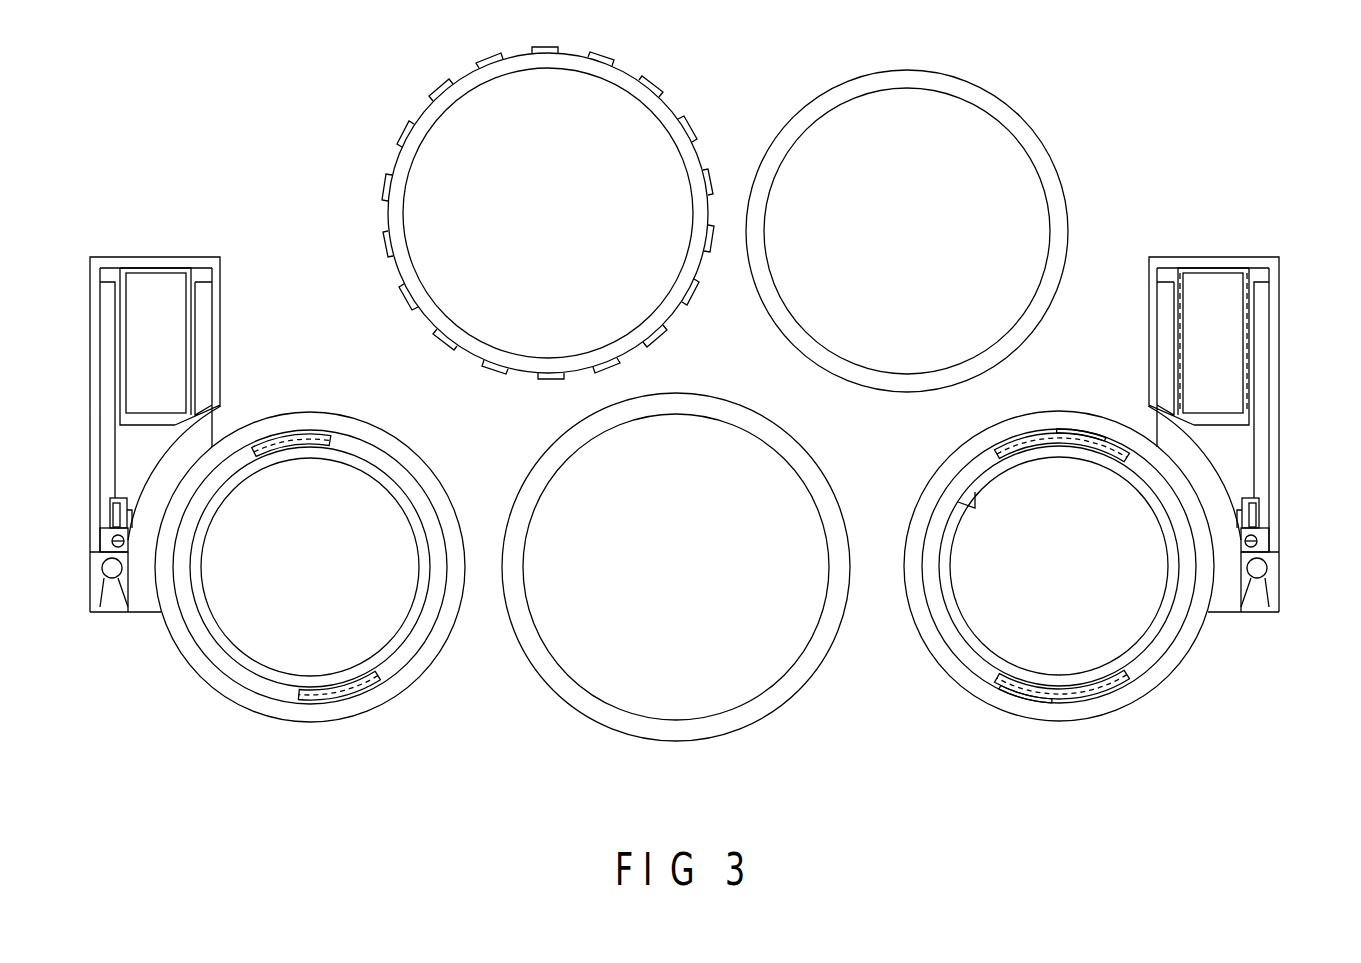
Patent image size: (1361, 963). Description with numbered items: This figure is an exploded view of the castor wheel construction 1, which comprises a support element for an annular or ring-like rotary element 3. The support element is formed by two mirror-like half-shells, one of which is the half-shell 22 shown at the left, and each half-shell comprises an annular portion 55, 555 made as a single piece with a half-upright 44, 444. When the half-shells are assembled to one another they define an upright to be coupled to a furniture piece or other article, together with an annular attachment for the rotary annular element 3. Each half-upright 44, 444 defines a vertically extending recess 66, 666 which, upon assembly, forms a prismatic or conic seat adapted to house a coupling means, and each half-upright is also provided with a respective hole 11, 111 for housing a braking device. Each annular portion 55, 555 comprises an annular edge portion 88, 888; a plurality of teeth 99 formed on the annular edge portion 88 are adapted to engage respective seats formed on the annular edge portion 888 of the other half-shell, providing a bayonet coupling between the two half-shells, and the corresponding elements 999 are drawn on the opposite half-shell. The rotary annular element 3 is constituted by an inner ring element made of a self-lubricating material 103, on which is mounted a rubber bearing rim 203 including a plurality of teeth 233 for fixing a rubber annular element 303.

The castor wheel construction 1 is at (1113, 431).
The rotary annular element 3 is at (709, 398).
The hole 11 is at (110, 570).
The half-shell 22 is at (246, 517).
The half-upright 44 is at (97, 448).
The annular portion 55 is at (310, 569).
The recess 66 is at (187, 330).
The annular edge portion 88 is at (205, 513).
The teeth 99 is at (332, 695).
The inner ring element 103 is at (1030, 137).
The hole 111 is at (1258, 568).
The rubber bearing rim 203 is at (530, 213).
The teeth 233 is at (407, 297).
The rubber annular element 303 is at (562, 678).
The half-upright 444 is at (1280, 345).
The annular portion 555 is at (1042, 609).
The recess 666 is at (1212, 278).
The annular edge portion 888 is at (975, 508).
The tab 999 is at (1062, 566).